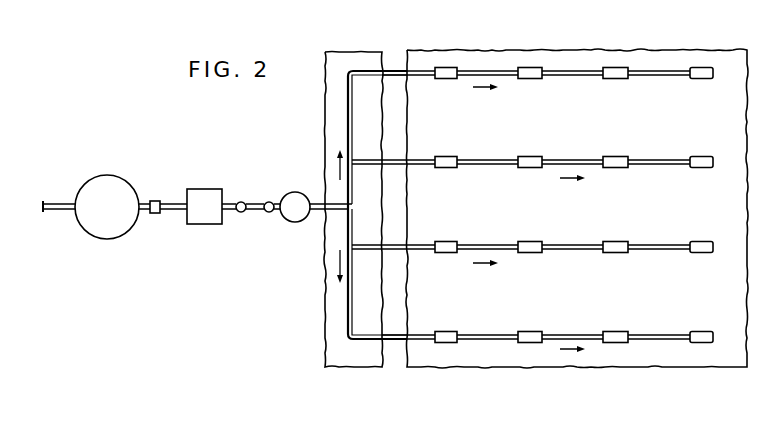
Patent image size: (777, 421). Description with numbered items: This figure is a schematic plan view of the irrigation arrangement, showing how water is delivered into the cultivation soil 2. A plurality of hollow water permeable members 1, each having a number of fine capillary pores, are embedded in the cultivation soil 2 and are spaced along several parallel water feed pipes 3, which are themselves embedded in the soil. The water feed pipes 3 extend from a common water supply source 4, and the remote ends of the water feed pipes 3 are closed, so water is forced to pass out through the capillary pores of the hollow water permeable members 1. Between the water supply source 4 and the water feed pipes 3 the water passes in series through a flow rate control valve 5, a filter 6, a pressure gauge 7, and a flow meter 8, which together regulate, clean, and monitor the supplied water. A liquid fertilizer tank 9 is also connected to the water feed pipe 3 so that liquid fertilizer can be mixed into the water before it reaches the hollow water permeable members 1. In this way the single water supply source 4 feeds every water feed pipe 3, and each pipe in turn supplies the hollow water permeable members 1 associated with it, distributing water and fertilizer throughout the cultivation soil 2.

The hollow water permeable member 1 is at (448, 80).
The cultivation soil 2 is at (664, 56).
The water feed pipe 3 is at (564, 71).
The water supply source 4 is at (107, 185).
The flow rate control valve 5 is at (155, 200).
The filter 6 is at (202, 189).
The pressure gauge 7 is at (241, 202).
The flow meter 8 is at (270, 202).
The liquid fertilizer tank 9 is at (296, 192).